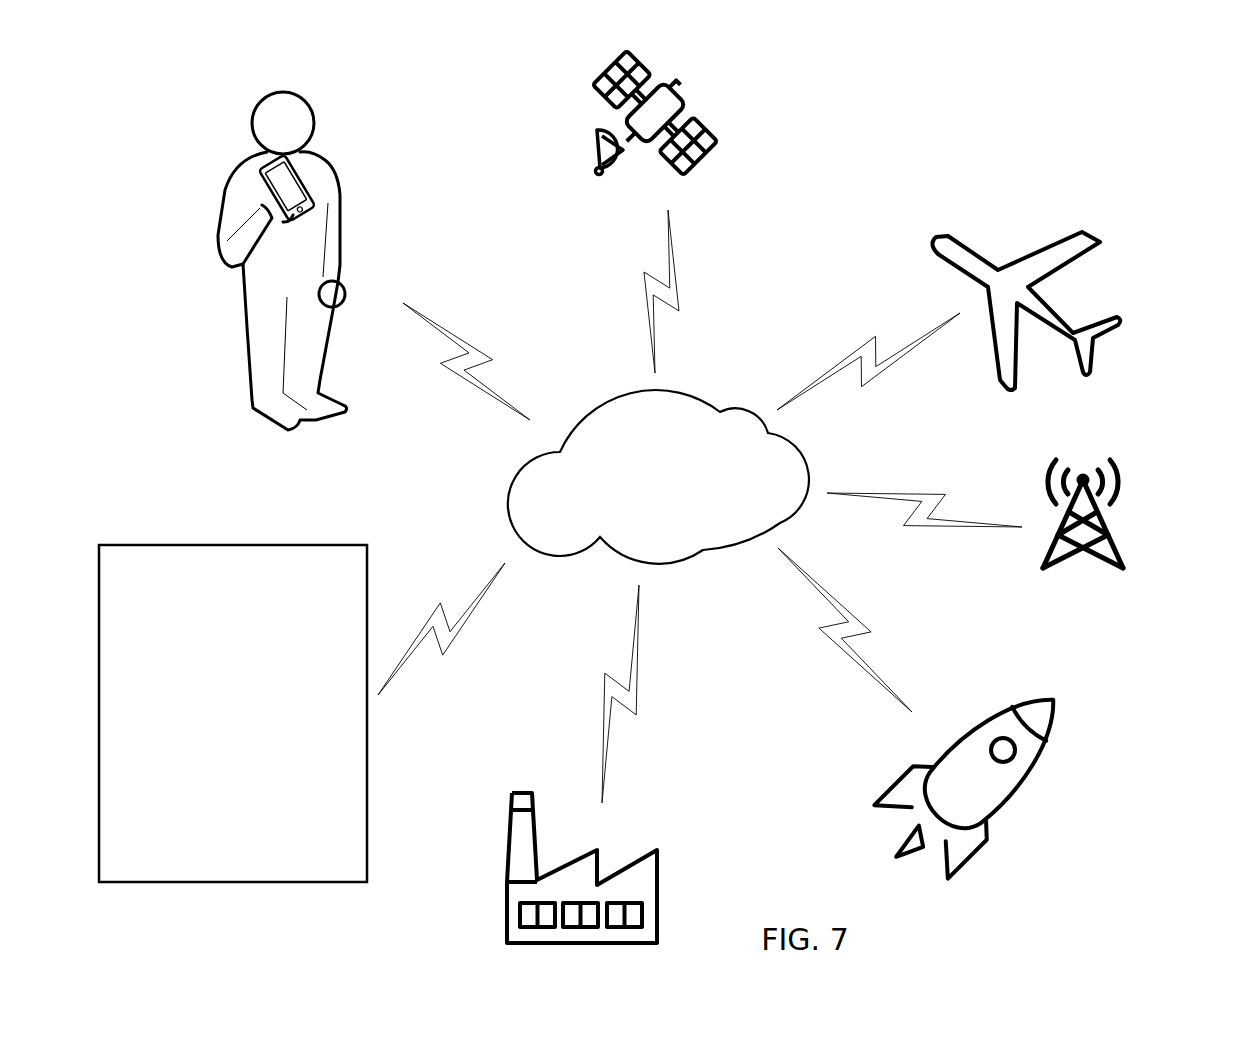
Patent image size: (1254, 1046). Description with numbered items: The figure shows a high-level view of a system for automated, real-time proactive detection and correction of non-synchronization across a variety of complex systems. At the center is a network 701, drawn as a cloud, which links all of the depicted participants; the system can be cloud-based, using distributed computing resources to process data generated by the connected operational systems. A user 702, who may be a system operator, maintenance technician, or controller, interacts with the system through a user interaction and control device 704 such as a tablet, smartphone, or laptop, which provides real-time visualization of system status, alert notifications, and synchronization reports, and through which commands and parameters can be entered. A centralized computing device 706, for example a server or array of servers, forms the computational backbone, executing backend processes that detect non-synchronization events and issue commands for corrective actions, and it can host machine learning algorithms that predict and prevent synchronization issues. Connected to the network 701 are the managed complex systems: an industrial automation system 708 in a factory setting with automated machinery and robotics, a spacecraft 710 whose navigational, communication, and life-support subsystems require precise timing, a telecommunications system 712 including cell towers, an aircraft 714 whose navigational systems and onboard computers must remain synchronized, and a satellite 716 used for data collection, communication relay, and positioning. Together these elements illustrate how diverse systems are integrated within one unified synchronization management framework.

The network 701 is at (648, 515).
The user 702 is at (218, 304).
The user interaction and control device 704 is at (310, 185).
The centralized computing device 706 is at (212, 868).
The industrial automation system 708 is at (665, 871).
The spacecraft 710 is at (1030, 803).
The telecommunications system 712 is at (1093, 590).
The aircraft 714 is at (1015, 235).
The satellite 716 is at (745, 97).